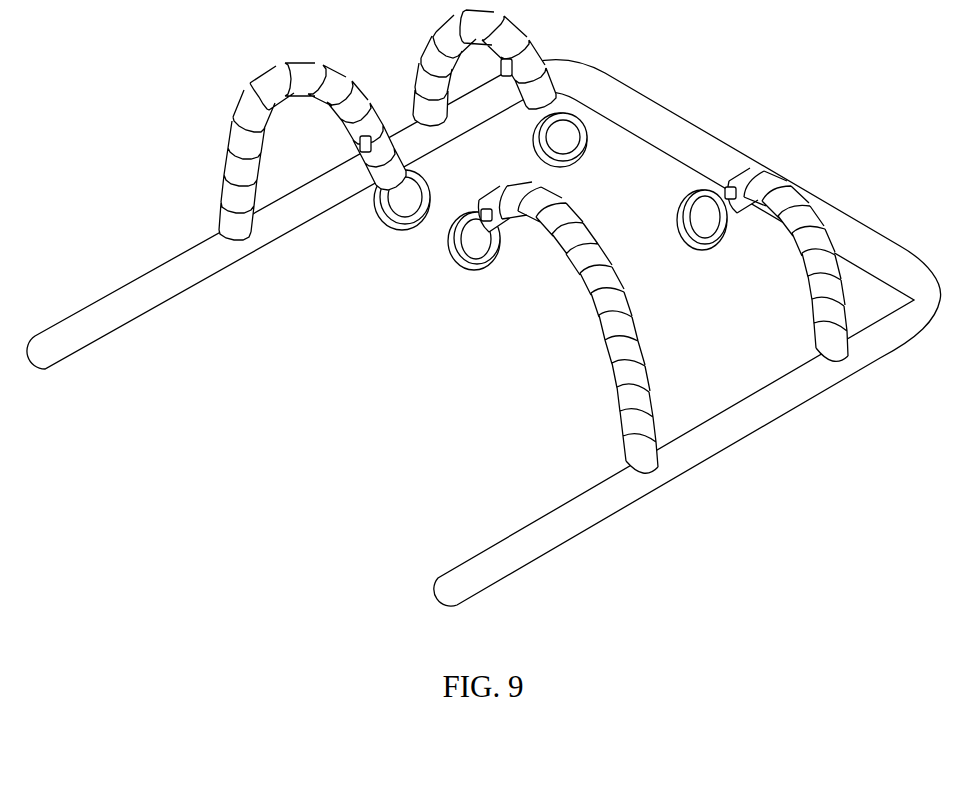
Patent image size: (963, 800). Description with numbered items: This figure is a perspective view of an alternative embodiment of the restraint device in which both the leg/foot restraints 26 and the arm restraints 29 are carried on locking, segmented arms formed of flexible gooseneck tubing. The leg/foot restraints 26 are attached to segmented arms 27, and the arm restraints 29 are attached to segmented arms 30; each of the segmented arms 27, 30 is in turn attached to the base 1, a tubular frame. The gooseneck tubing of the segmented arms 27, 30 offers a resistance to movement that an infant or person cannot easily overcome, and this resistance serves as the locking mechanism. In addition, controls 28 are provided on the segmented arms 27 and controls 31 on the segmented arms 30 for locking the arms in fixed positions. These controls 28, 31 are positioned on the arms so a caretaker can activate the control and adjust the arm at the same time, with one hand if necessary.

The base 1 is at (109, 290).
The leg/foot restraints 26 is at (446, 250).
The segmented arms 27 is at (225, 143).
The controls 28 is at (357, 147).
The arm restraints 29 is at (670, 212).
The segmented arms 30 is at (416, 65).
The controls 31 is at (510, 85).